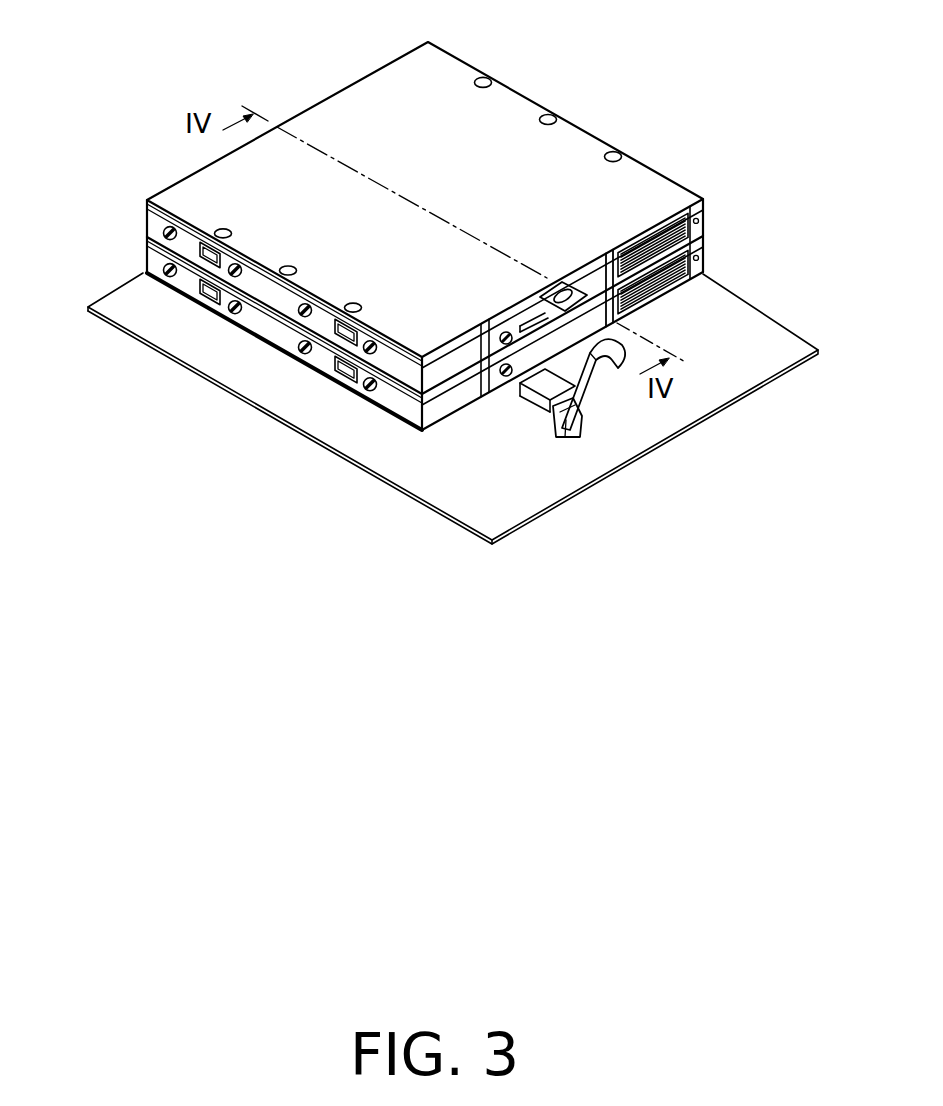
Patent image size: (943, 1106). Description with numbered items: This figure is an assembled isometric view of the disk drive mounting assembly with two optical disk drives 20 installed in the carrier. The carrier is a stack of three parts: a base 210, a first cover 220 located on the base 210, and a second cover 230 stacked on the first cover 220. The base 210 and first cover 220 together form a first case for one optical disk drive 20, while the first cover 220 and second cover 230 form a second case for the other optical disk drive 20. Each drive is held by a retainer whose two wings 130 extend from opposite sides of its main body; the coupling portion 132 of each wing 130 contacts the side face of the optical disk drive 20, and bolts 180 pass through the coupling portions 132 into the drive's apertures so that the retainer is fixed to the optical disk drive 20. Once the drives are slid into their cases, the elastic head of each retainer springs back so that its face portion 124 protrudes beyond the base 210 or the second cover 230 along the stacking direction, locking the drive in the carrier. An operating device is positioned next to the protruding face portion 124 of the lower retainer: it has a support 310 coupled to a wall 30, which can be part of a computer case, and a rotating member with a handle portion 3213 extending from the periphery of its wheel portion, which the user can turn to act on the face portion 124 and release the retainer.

The optical disk drive 20 is at (704, 215).
The wall 30 is at (250, 377).
The face portion 124 is at (552, 286).
The wing 130 is at (637, 303).
The coupling portion 132 is at (503, 375).
The bolt 180 is at (510, 368).
The base 210 is at (217, 315).
The first cover 220 is at (155, 264).
The second cover 230 is at (157, 227).
The support 310 is at (568, 422).
The handle portion 3213 is at (592, 392).